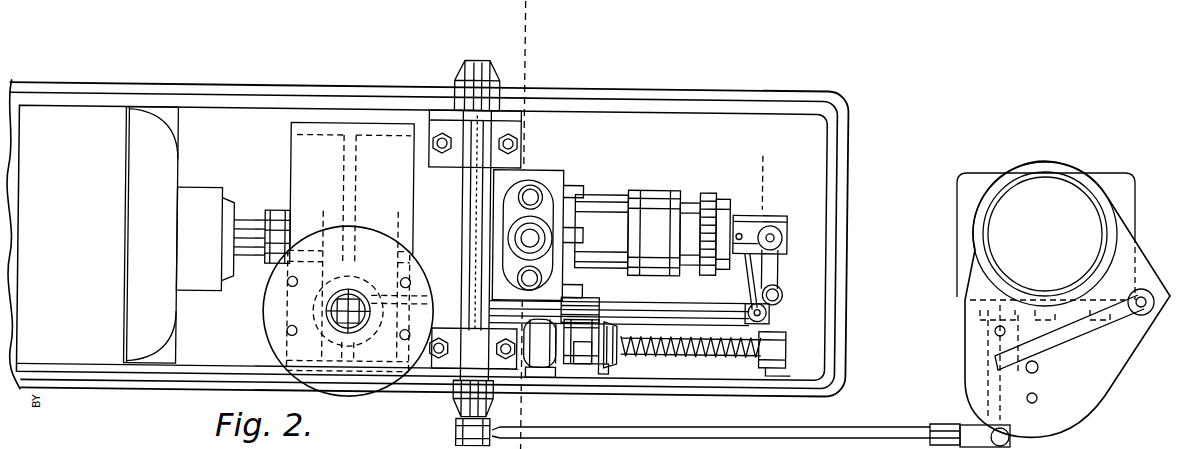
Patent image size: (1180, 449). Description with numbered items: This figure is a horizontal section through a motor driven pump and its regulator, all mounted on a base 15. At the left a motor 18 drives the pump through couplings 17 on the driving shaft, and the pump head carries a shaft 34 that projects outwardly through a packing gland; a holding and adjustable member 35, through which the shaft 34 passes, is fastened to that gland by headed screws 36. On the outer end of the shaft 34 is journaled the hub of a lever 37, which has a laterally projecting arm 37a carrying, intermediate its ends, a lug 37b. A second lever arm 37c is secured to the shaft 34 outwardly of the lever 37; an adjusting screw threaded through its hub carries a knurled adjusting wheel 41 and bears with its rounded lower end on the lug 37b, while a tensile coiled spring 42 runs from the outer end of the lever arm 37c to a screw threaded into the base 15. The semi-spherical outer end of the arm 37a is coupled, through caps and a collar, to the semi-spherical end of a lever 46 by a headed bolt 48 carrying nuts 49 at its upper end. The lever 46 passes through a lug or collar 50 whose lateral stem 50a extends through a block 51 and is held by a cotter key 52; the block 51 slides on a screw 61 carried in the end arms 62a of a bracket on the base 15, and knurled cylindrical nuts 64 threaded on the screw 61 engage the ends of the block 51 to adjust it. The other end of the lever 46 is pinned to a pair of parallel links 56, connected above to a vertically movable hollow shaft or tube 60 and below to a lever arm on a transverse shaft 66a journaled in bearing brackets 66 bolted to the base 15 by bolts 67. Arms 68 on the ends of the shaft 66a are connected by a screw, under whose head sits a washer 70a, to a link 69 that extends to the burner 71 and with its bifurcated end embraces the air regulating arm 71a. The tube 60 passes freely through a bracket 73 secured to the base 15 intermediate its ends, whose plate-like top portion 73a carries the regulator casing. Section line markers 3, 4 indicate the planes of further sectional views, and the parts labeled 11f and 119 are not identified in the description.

The section line 3- 3 is at (740, 166).
The section line 4- 4 is at (508, 5).
The base 15 is at (614, 90).
The couplings 17 is at (278, 212).
The motor 18 is at (163, 177).
The bracket 73 is at (293, 133).
The plate-like top portion 73a is at (276, 298).
The links 56 is at (328, 312).
The hollow shaft or tube 60 is at (342, 292).
The bearing brackets 66 is at (514, 128).
The shaft 66a is at (465, 196).
The arms 68 is at (458, 76).
The washer 70a is at (466, 440).
The bolts 67 is at (515, 146).
The upper bearing 11f is at (532, 196).
The lower bearing 119 is at (546, 279).
The headed screws 36 is at (700, 203).
The holding and adjustable member 35 is at (697, 273).
The shaft 34 is at (722, 192).
The laterally projecting arm 37a is at (730, 264).
The lever 37 is at (750, 212).
The lever arm 37c is at (770, 212).
The knurled adjusting wheel 41 is at (781, 235).
The lug 37b is at (781, 277).
The tensile coiled spring 42 is at (782, 292).
The headed bolt 48 is at (768, 311).
The nuts 49 is at (771, 320).
The lever 46 is at (632, 310).
The lug or collar 50 is at (590, 300).
The nuts 64 is at (612, 352).
The block 51 is at (568, 362).
The stem 50a is at (586, 362).
The cotter key 52 is at (606, 368).
The screw 61 is at (676, 354).
The end arms 62a is at (783, 353).
The link 69 is at (595, 437).
The burner 71 is at (1095, 396).
The air regulating arm 71a is at (978, 388).